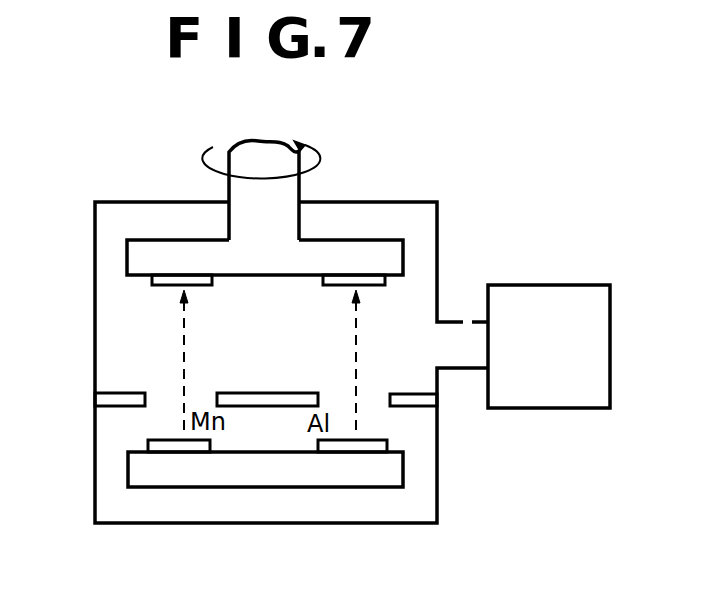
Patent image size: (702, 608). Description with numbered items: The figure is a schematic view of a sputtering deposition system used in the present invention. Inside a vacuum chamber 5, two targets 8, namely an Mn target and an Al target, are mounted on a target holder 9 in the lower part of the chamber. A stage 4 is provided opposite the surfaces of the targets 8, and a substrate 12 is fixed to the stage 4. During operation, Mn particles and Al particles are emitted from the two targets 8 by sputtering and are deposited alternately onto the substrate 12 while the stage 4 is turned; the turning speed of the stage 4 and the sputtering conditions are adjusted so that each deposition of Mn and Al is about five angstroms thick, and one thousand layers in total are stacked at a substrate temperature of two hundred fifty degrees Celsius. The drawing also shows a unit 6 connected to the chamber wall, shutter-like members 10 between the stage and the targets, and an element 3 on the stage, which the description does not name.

The vacuum chamber 5 is at (95, 218).
The stage 4 is at (140, 258).
The substrate 12 is at (174, 287).
The Al target 3 is at (376, 287).
The shutters 10 is at (118, 392).
The targets 8 is at (148, 442).
The target holder 9 is at (246, 474).
The power supply 6 is at (558, 361).